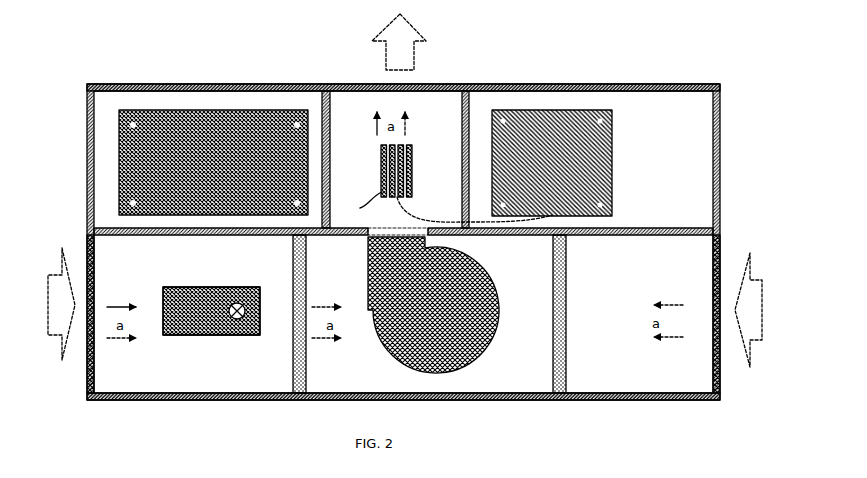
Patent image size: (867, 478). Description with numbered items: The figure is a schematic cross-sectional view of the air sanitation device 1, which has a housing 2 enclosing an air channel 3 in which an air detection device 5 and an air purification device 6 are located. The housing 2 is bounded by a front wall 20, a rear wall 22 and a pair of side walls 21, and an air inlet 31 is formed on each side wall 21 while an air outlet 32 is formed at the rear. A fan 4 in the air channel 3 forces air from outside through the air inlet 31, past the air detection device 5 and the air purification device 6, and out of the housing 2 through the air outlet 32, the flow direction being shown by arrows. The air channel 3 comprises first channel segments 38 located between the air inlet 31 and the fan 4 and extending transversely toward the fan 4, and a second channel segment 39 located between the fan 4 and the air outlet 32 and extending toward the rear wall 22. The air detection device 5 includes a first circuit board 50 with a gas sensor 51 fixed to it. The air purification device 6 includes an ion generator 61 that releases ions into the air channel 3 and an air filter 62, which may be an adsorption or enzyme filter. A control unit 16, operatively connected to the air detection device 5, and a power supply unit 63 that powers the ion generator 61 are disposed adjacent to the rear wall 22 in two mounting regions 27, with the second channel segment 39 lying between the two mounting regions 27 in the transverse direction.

The air sanitation device 1 is at (196, 68).
The housing 2 is at (703, 86).
The air channel 3 is at (430, 224).
The fan 4 is at (500, 306).
The air detection device 5 is at (190, 336).
The air purification device 6 is at (338, 212).
The control unit 16 is at (123, 167).
The front wall 20 is at (590, 392).
The side wall 21 is at (720, 229).
The rear wall 22 is at (546, 86).
The mounting region 27 is at (386, 129).
The air inlet 31 is at (96, 363).
The air outlet 32 is at (438, 86).
The first channel segment 38 is at (387, 337).
The second channel segment 39 is at (412, 171).
The first circuit board 50 is at (190, 287).
The gas sensor 51 is at (262, 305).
The ion generator 61 is at (446, 207).
The air filter 62 is at (307, 285).
The power supply unit 63 is at (612, 171).